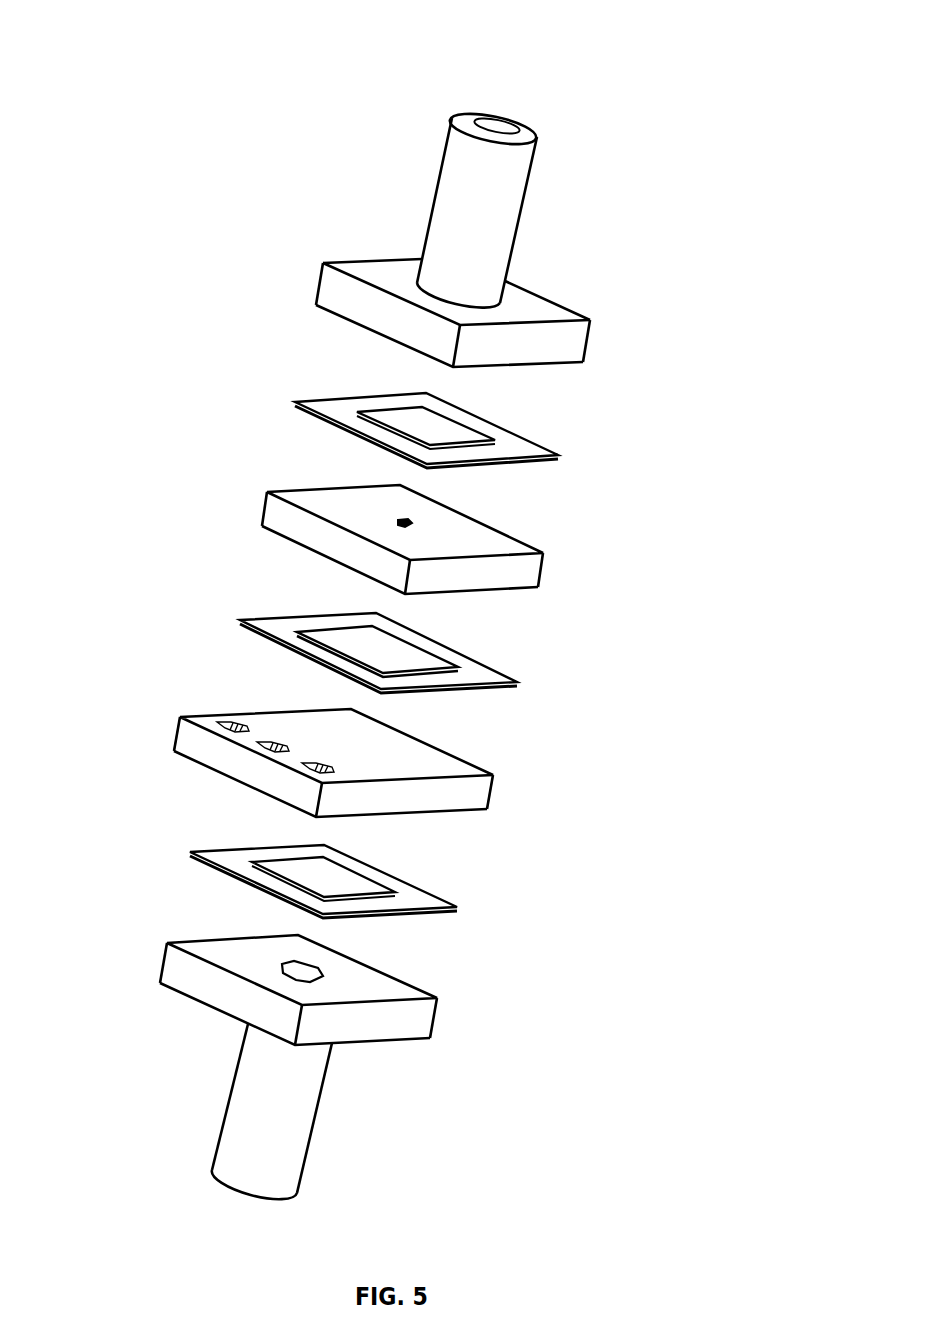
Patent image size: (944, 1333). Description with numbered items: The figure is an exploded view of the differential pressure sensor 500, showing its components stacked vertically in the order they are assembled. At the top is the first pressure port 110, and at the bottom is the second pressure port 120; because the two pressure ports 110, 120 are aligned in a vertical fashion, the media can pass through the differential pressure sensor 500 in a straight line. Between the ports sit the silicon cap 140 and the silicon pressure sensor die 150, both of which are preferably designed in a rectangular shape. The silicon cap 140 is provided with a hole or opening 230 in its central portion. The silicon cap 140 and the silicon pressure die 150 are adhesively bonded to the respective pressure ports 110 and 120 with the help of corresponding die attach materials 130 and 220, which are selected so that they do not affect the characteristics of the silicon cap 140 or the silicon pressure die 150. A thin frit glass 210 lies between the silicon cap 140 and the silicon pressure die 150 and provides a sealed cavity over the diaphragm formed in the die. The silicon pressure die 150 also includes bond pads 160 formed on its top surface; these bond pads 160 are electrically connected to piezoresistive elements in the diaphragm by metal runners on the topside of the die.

The differential pressure sensor 500 is at (726, 70).
The pressure port 110 is at (500, 232).
The pressure port 120 is at (295, 1127).
The die attach material 130 is at (522, 445).
The silicon cap 140 is at (520, 572).
The silicon pressure sensor die 150 is at (465, 797).
The bond pads 160 is at (303, 773).
The thin frit glass 210 is at (487, 672).
The die attach material 220 is at (422, 898).
The hole or opening 230 is at (402, 523).